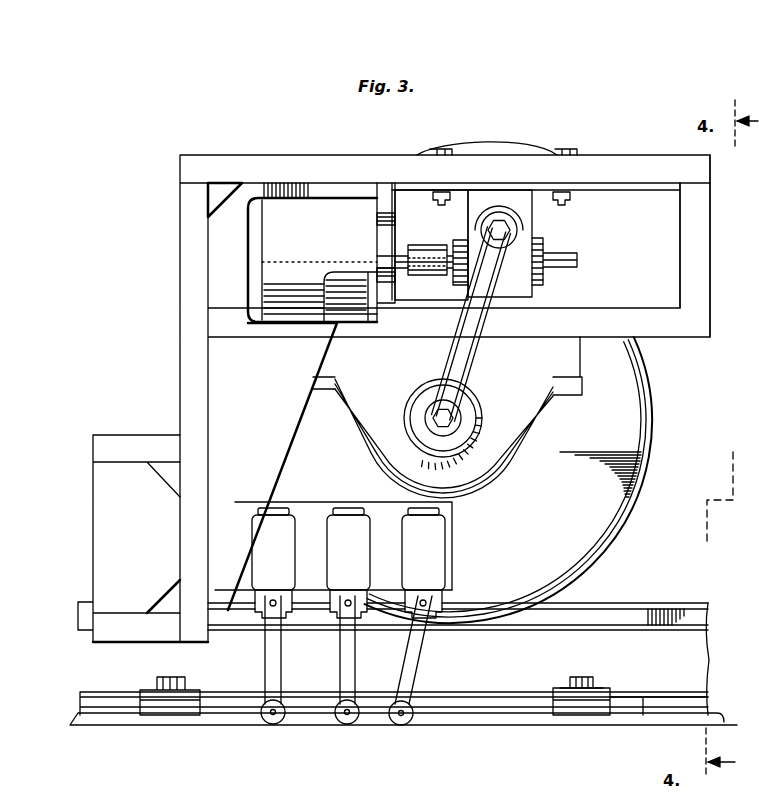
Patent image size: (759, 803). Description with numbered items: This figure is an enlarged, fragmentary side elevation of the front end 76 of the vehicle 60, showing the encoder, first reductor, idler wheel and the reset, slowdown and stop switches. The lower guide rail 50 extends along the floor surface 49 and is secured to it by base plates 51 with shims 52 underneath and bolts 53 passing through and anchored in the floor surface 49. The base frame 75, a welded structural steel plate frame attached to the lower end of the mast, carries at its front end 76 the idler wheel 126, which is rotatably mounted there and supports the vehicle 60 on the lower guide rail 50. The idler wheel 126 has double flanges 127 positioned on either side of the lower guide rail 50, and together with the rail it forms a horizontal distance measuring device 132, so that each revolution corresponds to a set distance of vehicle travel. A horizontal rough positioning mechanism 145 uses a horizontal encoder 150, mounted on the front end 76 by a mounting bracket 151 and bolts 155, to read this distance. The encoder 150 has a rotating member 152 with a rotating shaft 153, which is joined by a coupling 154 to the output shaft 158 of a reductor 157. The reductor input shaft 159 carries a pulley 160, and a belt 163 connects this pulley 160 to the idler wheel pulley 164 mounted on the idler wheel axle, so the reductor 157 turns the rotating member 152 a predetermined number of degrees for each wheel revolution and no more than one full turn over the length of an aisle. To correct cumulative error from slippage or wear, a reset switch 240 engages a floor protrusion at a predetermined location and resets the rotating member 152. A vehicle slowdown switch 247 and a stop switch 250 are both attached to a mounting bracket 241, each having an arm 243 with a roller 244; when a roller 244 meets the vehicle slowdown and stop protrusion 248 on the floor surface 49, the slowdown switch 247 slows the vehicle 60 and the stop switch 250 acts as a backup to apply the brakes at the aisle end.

The front end 76 is at (180, 155).
The vehicle 60 is at (711, 161).
The bolts 155 is at (431, 153).
The mounting bracket 151 is at (593, 189).
The horizontal rough positioning mechanism 145 is at (533, 296).
The reductor 157 is at (535, 216).
The output shaft 158 is at (455, 248).
The reductor input shaft 159 is at (513, 231).
The pulley 160 is at (495, 265).
The belt 163 is at (450, 366).
The rotating shaft 153 is at (406, 258).
The coupling 154 is at (454, 272).
The horizontal encoder 150 is at (262, 308).
The rotating member 152 is at (337, 326).
The idler wheel pulley 164 is at (481, 401).
The horizontal distance measuring device 132 is at (654, 388).
The double flanges 127 is at (654, 430).
The idler wheel 126 is at (453, 368).
The base frame 75 is at (145, 436).
The vehicle slowdown switch 247 is at (455, 515).
The mounting bracket 241 is at (455, 590).
The stop switch 250 is at (276, 507).
The reset switch 240 is at (348, 507).
The arm 243 is at (349, 649).
The roller 244 is at (273, 726).
The vehicle slowdown and stop protrusion 248 is at (411, 727).
The lower guide rail 50 is at (657, 604).
The shims 52 is at (550, 690).
The bolts 53 is at (587, 678).
The base plates 51 is at (645, 698).
The floor surface 49 is at (722, 720).